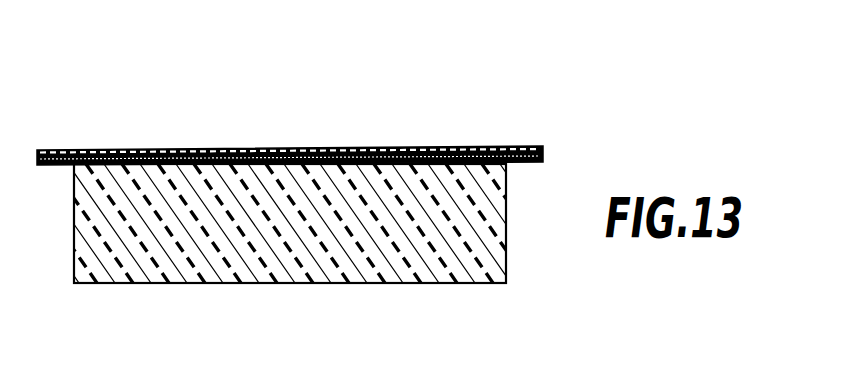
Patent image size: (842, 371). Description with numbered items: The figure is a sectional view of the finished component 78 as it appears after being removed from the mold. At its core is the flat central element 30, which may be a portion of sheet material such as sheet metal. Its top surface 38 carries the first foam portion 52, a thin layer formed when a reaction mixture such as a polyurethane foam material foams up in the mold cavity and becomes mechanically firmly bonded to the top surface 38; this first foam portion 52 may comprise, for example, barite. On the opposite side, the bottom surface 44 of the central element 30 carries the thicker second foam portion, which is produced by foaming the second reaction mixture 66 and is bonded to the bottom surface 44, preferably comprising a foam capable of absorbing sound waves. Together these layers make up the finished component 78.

The central element 30 is at (52, 166).
The top surface 38 is at (114, 150).
The bottom surface 44 is at (526, 163).
The first foam portion 52 is at (190, 148).
The second reaction mixture 66 is at (284, 230).
The finished component 78 is at (334, 128).